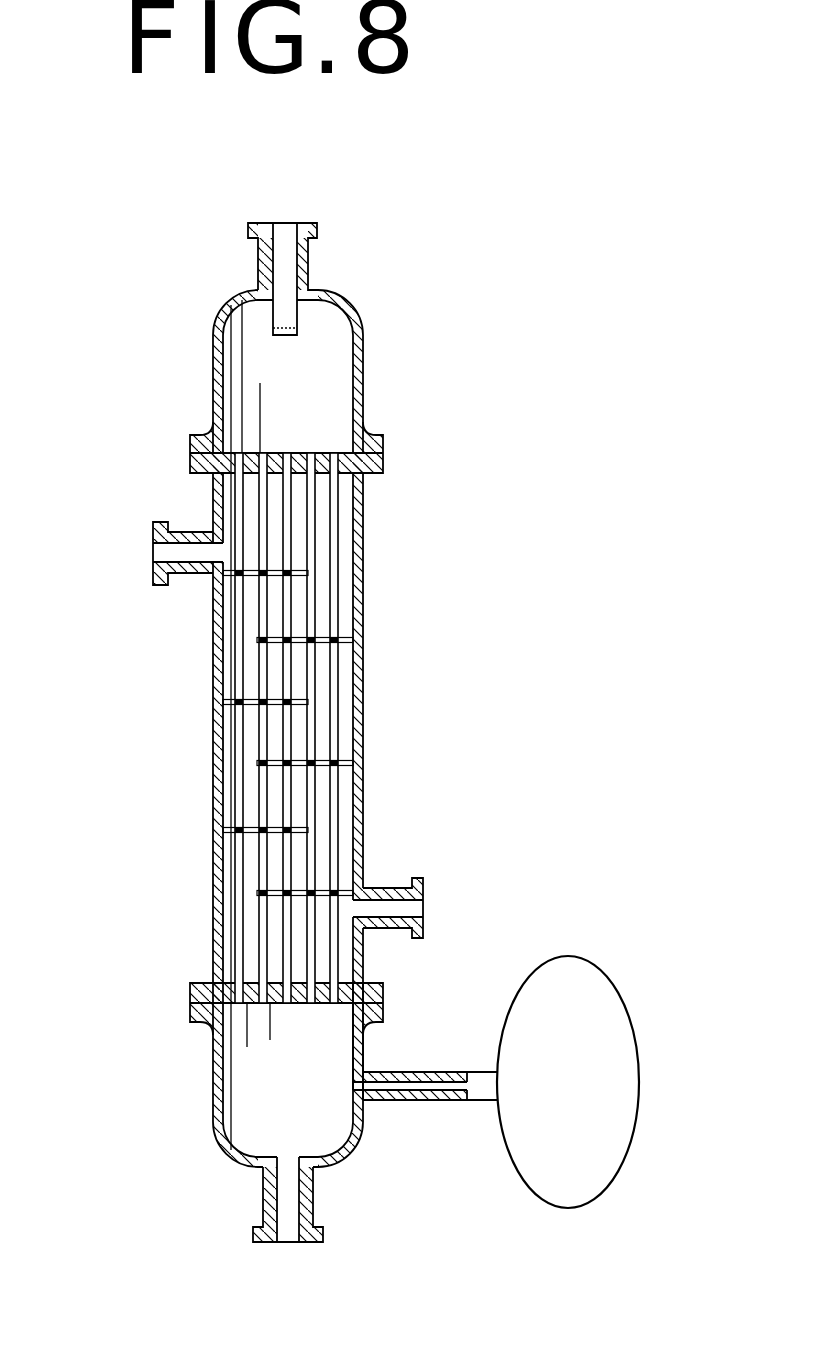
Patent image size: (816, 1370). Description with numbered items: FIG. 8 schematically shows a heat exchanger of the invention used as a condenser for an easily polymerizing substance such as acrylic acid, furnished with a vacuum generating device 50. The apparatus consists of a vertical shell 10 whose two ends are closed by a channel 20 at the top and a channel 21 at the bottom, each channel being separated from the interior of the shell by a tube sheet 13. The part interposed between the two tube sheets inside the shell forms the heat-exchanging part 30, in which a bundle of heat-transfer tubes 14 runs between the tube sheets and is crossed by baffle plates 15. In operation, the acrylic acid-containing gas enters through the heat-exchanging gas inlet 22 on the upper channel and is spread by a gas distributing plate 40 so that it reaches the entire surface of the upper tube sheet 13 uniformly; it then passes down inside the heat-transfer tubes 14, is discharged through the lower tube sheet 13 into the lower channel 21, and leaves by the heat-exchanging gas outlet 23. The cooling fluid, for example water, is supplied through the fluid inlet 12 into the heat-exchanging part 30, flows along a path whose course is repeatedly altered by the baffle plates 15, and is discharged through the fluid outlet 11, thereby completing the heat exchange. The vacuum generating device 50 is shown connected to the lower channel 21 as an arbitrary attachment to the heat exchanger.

The shell 10 is at (213, 688).
The fluid outlet 11 is at (157, 552).
The fluid inlet 12 is at (425, 900).
The tube sheet 13 is at (322, 458).
The heat-transfer tube 14 is at (235, 836).
The baffle plate 15 is at (303, 757).
The channel 20 is at (213, 335).
The channel 21 is at (213, 1132).
The heat-exchanging gas inlet 22 is at (309, 259).
The heat-exchanging gas outlet 23 is at (318, 1207).
The heat-exchanging part 30 is at (367, 822).
The gas distributing plate 40 is at (300, 323).
The vacuum generating device 50 is at (610, 1113).